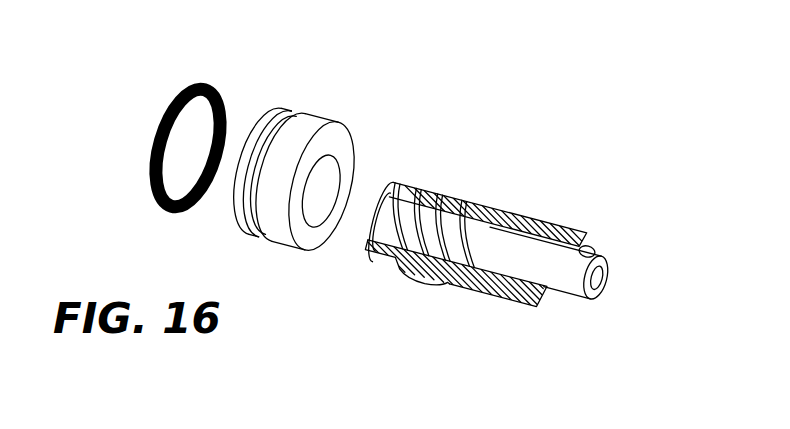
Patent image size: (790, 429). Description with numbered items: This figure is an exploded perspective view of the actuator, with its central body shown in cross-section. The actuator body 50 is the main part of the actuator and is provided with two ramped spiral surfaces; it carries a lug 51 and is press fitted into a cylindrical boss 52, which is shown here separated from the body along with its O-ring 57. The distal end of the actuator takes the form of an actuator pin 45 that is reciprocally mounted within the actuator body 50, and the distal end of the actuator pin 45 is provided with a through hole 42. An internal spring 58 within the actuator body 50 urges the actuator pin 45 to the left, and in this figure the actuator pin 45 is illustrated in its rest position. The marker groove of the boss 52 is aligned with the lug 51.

The through hole 42 is at (592, 252).
The actuator pin 45 is at (560, 273).
The actuator body 50 is at (541, 225).
The lug 51 is at (432, 280).
The cylindrical boss 52 is at (300, 135).
The O-ring 57 is at (160, 132).
The internal spring 58 is at (452, 203).